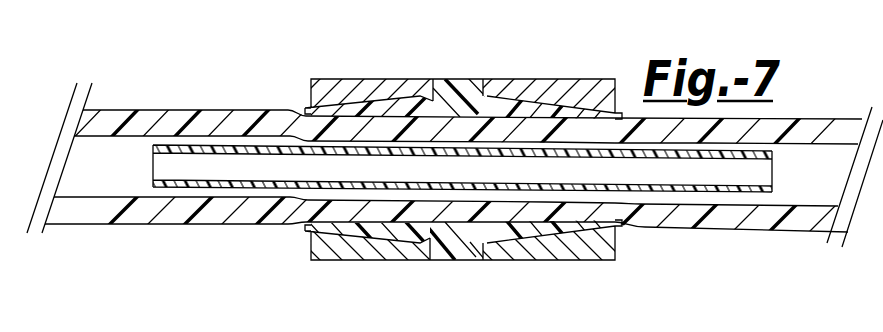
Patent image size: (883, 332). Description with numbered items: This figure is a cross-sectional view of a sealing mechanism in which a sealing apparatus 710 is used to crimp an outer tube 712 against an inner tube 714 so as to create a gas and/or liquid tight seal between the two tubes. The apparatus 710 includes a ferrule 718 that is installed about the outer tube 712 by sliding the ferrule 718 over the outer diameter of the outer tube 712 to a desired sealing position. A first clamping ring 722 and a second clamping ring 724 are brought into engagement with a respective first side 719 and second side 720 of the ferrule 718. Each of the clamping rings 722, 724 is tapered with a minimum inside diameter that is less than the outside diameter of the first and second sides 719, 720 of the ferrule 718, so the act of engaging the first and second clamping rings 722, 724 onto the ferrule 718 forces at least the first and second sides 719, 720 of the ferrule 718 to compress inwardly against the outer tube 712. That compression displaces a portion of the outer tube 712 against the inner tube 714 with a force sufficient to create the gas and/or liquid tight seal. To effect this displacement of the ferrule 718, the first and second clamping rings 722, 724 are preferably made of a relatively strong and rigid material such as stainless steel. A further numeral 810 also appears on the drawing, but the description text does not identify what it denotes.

The sealing apparatus 710 is at (626, 265).
The outer tube 712 is at (793, 117).
The inner tube 714 is at (772, 192).
The ferrule 718 is at (458, 262).
The first side of ferrule 719 is at (557, 233).
The second side of ferrule 720 is at (387, 240).
The first clamping ring 722 is at (548, 79).
The second clamping ring 724 is at (332, 79).
The tube 810 is at (95, 331).